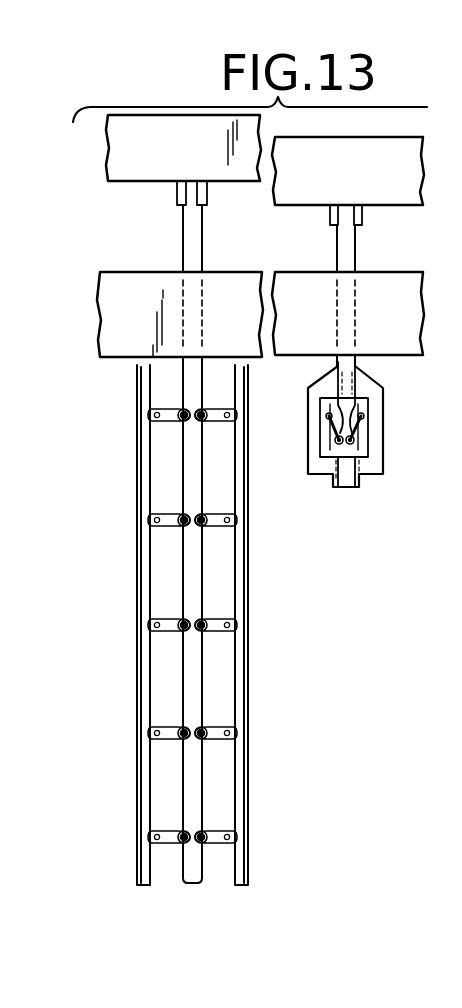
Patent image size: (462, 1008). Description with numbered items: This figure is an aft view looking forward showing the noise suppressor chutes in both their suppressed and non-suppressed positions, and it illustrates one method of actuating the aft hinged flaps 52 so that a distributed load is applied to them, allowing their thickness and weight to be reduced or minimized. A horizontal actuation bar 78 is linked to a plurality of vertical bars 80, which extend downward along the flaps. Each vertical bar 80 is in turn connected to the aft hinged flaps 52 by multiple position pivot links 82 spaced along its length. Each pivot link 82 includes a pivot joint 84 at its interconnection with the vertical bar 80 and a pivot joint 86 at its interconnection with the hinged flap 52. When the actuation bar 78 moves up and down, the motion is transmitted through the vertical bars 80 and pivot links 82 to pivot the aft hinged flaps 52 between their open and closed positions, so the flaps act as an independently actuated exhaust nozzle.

The aft hinged flaps 52 is at (137, 503).
The horizontal actuation bar 78 is at (138, 144).
The vertical bars 80 is at (185, 243).
The pivot links 82 is at (170, 410).
The pivot joint 84 is at (158, 618).
The pivot joint 86 is at (228, 620).